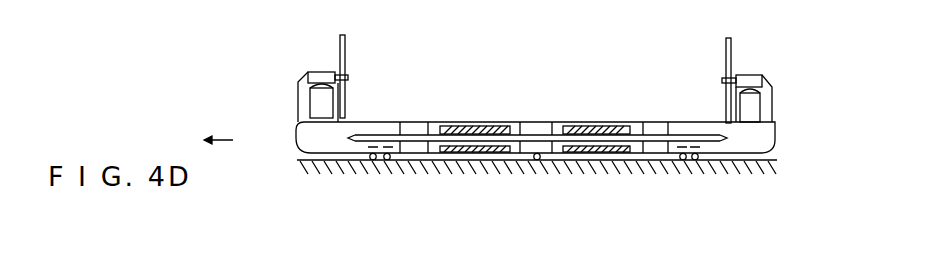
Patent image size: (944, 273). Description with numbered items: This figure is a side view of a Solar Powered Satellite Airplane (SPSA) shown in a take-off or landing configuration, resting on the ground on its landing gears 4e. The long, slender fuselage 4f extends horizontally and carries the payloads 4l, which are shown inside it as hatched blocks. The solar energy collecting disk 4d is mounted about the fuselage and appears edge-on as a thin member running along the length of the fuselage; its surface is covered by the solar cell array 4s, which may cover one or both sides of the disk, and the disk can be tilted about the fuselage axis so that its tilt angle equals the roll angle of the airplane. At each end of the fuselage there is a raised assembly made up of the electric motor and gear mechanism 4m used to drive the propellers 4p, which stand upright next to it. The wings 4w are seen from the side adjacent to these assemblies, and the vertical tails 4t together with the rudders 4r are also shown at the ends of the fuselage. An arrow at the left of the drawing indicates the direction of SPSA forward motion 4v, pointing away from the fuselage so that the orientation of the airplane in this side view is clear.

The electric motor and gear mechanism 4m is at (318, 72).
The propellers 4p is at (346, 50).
The wings 4w is at (322, 86).
The rudders 4r is at (300, 107).
The vertical tails 4t is at (331, 113).
The fuselage 4f is at (373, 125).
The payloads 4l is at (472, 125).
The solar cell array 4s is at (530, 123).
The solar energy collecting disk 4d is at (352, 140).
The landing gears 4e is at (380, 163).
The direction of SPSA forward motion 4v is at (237, 139).